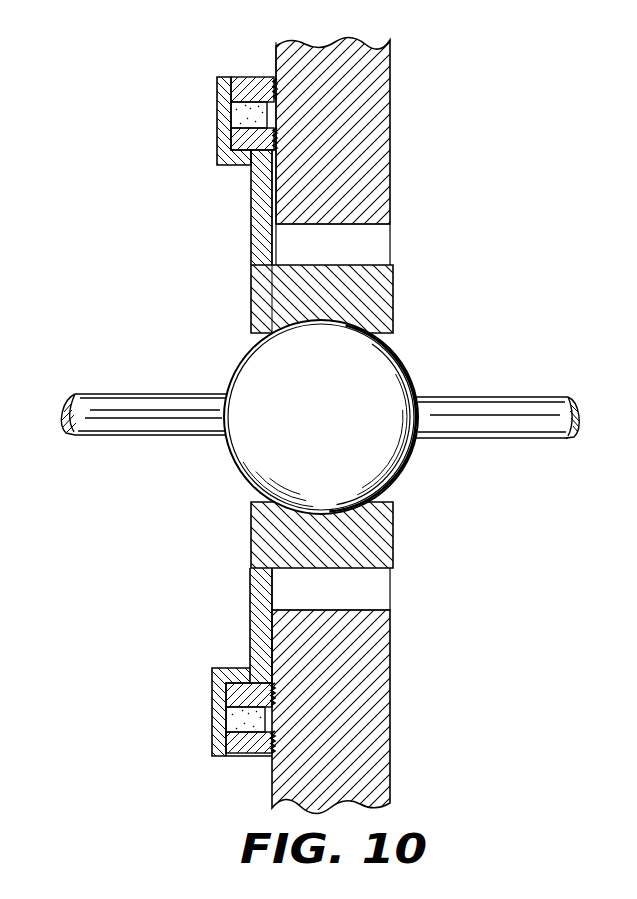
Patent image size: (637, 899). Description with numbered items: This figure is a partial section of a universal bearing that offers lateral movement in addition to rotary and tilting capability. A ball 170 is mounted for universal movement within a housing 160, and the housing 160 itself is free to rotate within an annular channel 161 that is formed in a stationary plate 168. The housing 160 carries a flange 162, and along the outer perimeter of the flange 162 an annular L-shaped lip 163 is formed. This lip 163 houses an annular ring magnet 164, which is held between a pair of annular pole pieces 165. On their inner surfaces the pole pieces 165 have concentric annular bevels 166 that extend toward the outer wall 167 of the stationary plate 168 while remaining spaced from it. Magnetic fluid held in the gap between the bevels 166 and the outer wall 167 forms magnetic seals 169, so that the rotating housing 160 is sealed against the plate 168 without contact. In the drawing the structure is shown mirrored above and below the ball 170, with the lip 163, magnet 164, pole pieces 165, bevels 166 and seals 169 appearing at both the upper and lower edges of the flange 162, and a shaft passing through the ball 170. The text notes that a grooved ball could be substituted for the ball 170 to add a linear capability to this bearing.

The housing 160 is at (251, 297).
The annular channel 161 is at (387, 226).
The flange 162 is at (252, 210).
The annular L-shaped lip 163 is at (217, 105).
The annular ring magnet 164 is at (236, 118).
The annular pole pieces 165 is at (262, 79).
The concentric annular bevels 166 is at (278, 87).
The outer wall 167 is at (277, 56).
The stationary plate 168 is at (384, 109).
The magnetic seals 169 is at (278, 150).
The ball 170 is at (341, 395).